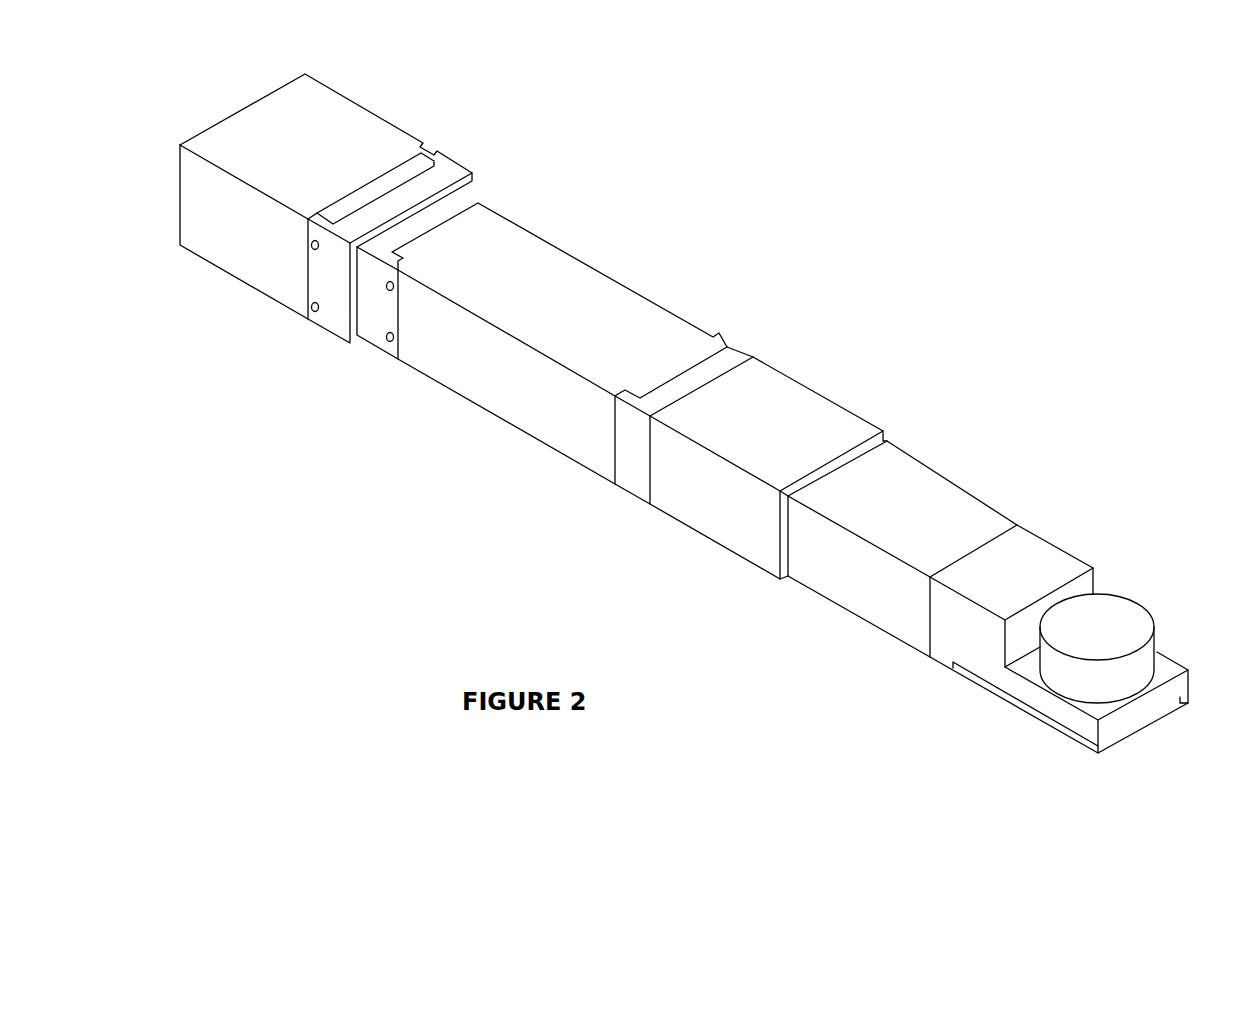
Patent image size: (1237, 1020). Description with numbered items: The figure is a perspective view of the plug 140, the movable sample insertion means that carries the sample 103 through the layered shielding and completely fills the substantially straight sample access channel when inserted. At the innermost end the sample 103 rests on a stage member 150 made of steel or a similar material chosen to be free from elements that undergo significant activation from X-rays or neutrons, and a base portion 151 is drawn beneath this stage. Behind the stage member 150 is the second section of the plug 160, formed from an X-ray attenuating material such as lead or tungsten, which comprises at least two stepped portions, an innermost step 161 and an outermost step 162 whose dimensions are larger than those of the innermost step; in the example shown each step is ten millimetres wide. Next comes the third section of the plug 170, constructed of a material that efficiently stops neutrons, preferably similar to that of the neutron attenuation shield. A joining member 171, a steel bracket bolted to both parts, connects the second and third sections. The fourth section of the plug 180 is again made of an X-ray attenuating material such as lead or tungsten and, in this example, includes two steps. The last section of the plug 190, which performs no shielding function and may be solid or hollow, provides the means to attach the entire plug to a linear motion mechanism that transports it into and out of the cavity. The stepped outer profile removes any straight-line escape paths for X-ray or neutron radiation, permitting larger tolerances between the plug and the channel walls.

The plug 140 is at (833, 211).
The last section of the plug 190 is at (326, 196).
The fourth section of the plug 180 is at (474, 191).
The third section of the plug 170 is at (559, 343).
The joining member 171 is at (677, 381).
The second section of the plug 160 is at (940, 492).
The outermost step 162 is at (751, 463).
The innermost step 161 is at (902, 549).
The stage member 150 is at (1011, 596).
The sample 103 is at (1097, 648).
The base plate 151 is at (1189, 700).